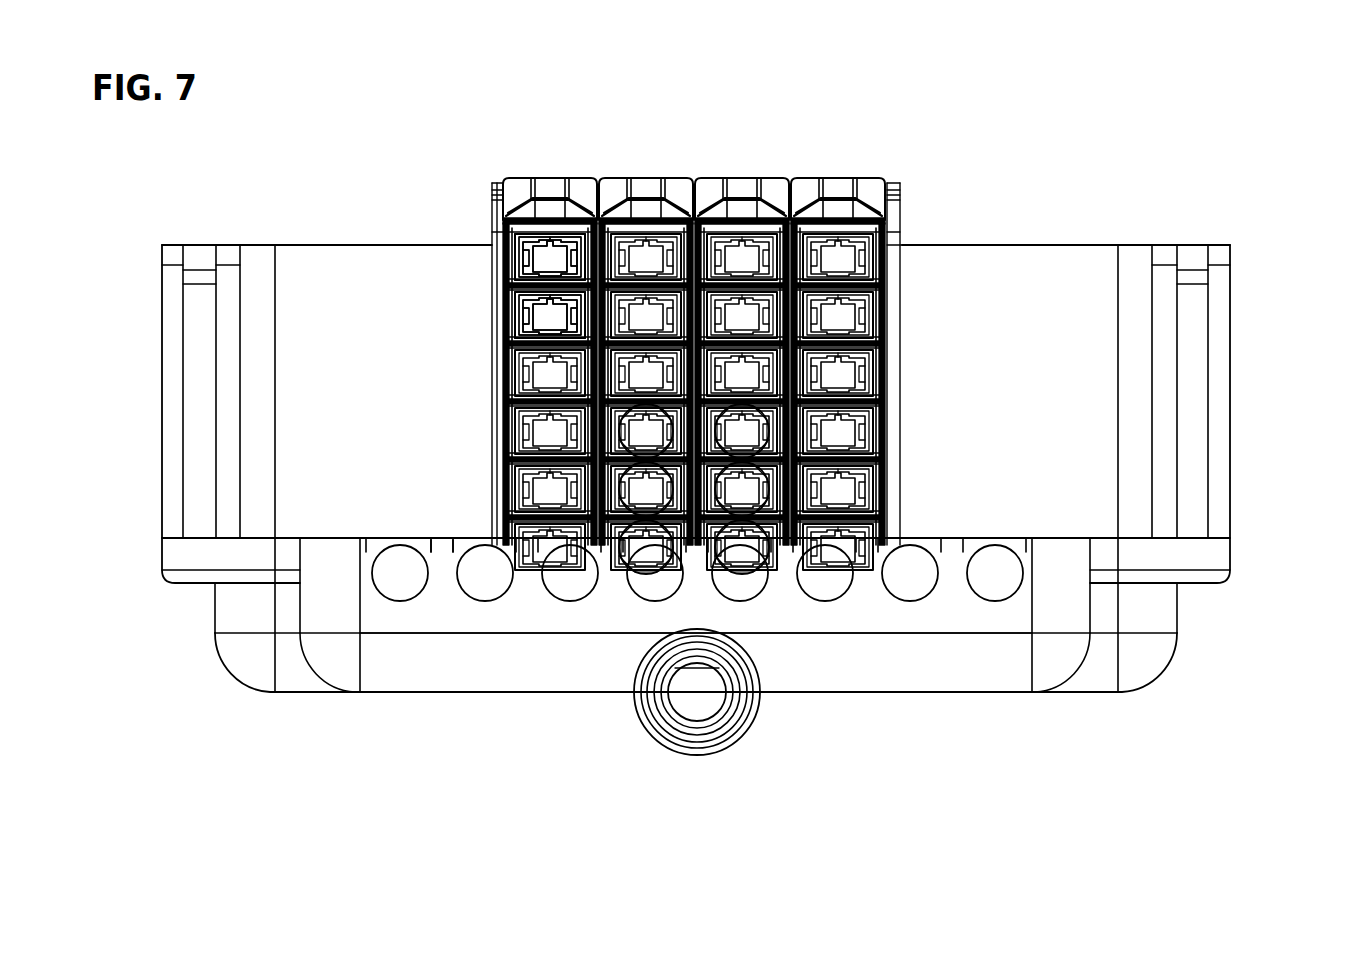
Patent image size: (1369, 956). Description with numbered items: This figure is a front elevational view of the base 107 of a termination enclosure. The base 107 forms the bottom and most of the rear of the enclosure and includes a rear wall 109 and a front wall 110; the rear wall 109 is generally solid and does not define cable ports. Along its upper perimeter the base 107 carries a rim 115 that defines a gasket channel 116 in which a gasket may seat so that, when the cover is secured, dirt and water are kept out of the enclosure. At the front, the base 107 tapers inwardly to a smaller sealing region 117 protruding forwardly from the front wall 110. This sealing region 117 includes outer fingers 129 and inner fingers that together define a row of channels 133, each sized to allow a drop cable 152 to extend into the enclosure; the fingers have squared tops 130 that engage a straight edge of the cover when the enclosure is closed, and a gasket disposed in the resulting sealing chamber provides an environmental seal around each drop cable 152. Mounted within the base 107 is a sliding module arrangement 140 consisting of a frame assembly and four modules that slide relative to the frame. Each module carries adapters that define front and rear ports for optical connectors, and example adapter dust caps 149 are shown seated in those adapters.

The base 107 is at (345, 245).
The rear wall 109 is at (1040, 330).
The front wall 110 is at (1103, 610).
The rim 115 is at (1232, 302).
The gasket channel 116 is at (1192, 270).
The sealing region 117 is at (866, 602).
The outer fingers 129 is at (440, 553).
The squared tops 130 is at (438, 540).
The channels 133 is at (372, 590).
The sliding module arrangement 140 is at (920, 212).
The adapter dust caps 149 is at (545, 308).
The drop cable 152 is at (997, 572).